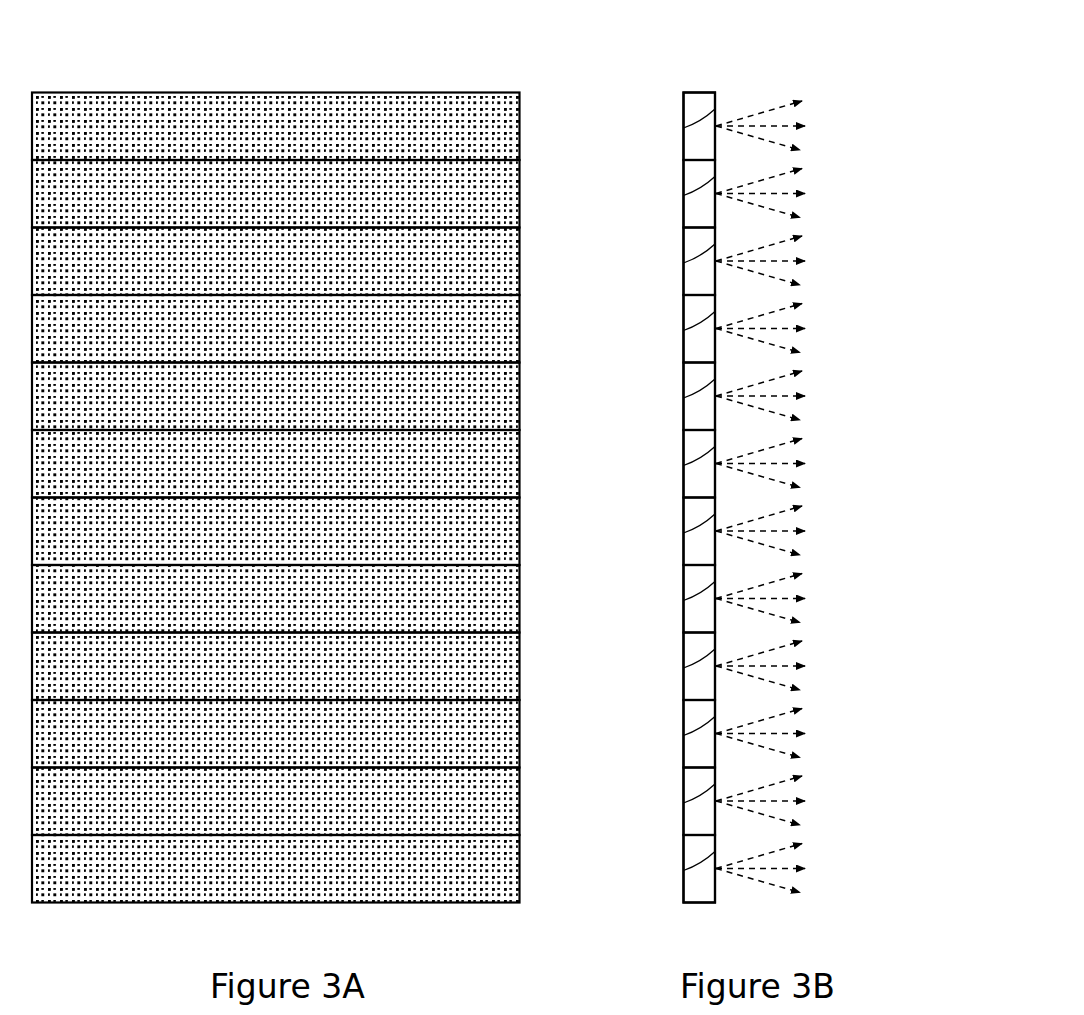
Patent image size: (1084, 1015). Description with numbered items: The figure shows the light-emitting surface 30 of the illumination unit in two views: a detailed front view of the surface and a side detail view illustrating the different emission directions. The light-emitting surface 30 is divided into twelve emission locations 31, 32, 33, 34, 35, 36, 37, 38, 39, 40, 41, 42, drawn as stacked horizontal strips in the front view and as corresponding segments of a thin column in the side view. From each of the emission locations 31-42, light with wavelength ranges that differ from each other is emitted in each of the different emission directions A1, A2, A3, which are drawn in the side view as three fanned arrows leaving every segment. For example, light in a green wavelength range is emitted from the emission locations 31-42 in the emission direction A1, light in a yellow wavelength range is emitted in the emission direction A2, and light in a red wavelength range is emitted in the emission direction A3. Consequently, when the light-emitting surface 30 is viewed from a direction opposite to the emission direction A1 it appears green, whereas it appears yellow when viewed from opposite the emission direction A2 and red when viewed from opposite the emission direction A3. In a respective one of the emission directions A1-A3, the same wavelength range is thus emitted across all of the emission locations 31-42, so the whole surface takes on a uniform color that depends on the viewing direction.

In FIG. 3B, the light-emitting surface 30 is at (537, 82).
In FIG. 3A, the emission location 31 is at (520, 126).
In FIG. 3B, the emission location 31 is at (685, 126).
In FIG. 3A, the emission location 32 is at (520, 194).
In FIG. 3B, the emission location 32 is at (685, 194).
In FIG. 3A, the emission location 33 is at (520, 261).
In FIG. 3B, the emission location 33 is at (685, 261).
In FIG. 3A, the emission location 34 is at (520, 328).
In FIG. 3B, the emission location 34 is at (685, 328).
In FIG. 3A, the emission location 35 is at (520, 396).
In FIG. 3B, the emission location 35 is at (685, 396).
In FIG. 3A, the emission location 36 is at (520, 464).
In FIG. 3B, the emission location 36 is at (685, 464).
In FIG. 3A, the emission location 37 is at (520, 531).
In FIG. 3B, the emission location 37 is at (685, 531).
In FIG. 3A, the emission location 38 is at (520, 598).
In FIG. 3B, the emission location 38 is at (685, 598).
In FIG. 3A, the emission location 39 is at (520, 666).
In FIG. 3B, the emission location 39 is at (685, 666).
In FIG. 3A, the emission location 40 is at (520, 734).
In FIG. 3B, the emission location 40 is at (685, 734).
In FIG. 3A, the emission location 41 is at (520, 801).
In FIG. 3B, the emission location 41 is at (685, 801).
In FIG. 3A, the emission location 42 is at (520, 868).
In FIG. 3B, the emission location 42 is at (685, 868).
In FIG. 3B, the emission direction A1 is at (776, 100).
In FIG. 3B, the emission direction A2 is at (790, 121).
In FIG. 3B, the emission direction A3 is at (778, 138).